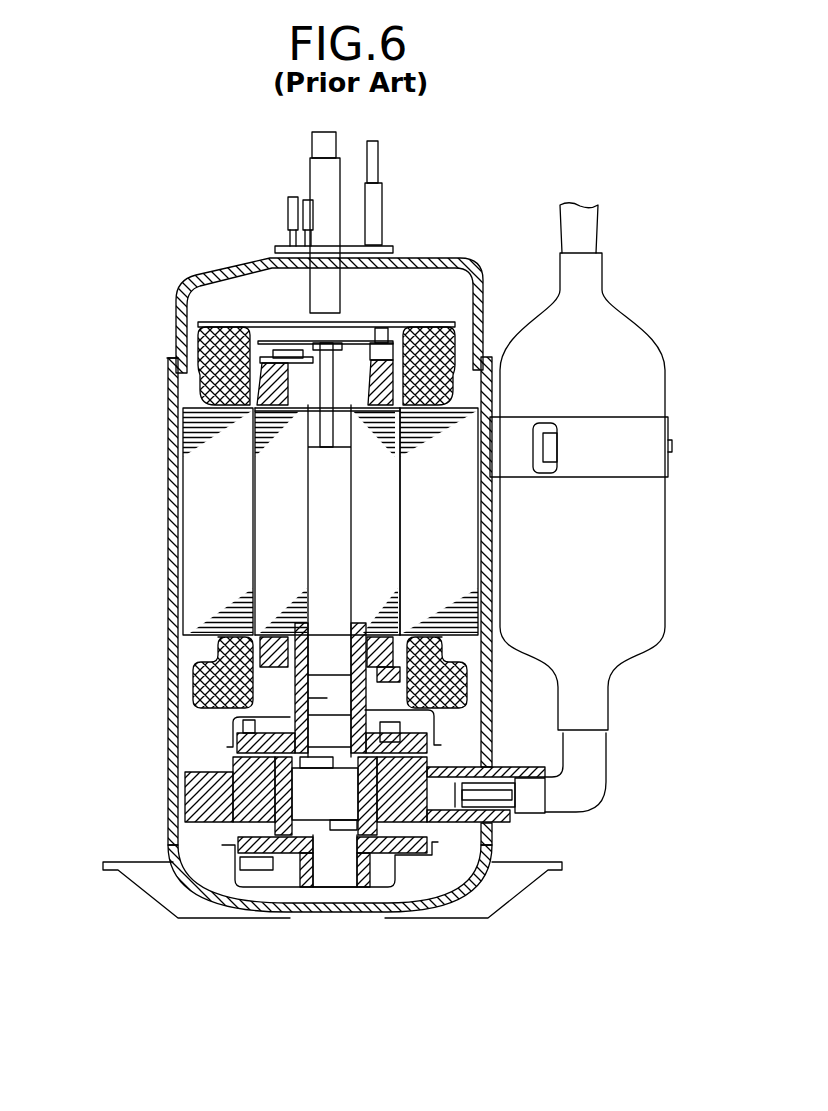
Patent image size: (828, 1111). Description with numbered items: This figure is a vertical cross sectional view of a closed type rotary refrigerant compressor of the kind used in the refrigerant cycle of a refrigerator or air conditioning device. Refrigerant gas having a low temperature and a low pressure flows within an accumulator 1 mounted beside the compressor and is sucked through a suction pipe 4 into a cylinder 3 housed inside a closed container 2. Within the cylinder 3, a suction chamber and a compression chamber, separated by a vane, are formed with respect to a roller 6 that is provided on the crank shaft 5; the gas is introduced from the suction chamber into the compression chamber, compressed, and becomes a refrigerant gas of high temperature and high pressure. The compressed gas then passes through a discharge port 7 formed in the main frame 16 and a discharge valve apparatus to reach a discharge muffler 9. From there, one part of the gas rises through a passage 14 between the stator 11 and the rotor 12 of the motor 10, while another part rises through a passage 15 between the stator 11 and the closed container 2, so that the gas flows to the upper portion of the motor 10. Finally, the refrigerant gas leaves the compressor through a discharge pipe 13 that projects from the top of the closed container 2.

The accumulator 1 is at (647, 383).
The closed container 2 is at (170, 699).
The cylinder 3 is at (237, 818).
The suction pipe 4 is at (532, 817).
The crank shaft 5 is at (237, 717).
The roller 6 is at (185, 802).
The discharge port 7 is at (438, 840).
The discharge muffler 9 is at (423, 723).
The motor 10 is at (190, 395).
The stator 11 is at (193, 480).
The rotor 12 is at (277, 552).
The discharge pipe 13 is at (323, 180).
The passage 14 is at (257, 508).
The passage 15 is at (170, 603).
The main frame 16 is at (465, 682).